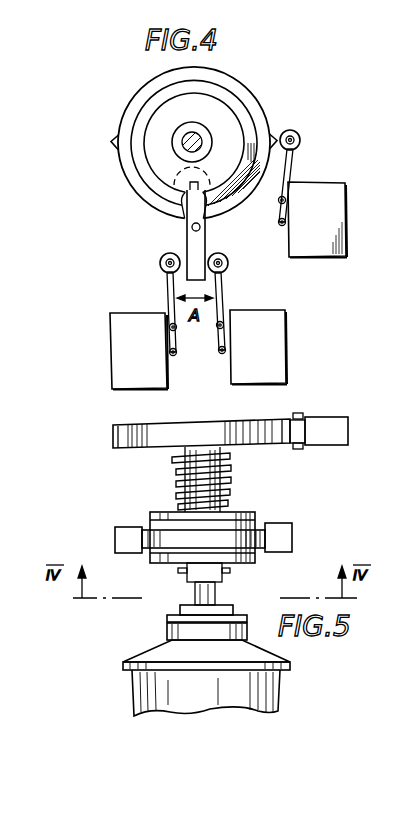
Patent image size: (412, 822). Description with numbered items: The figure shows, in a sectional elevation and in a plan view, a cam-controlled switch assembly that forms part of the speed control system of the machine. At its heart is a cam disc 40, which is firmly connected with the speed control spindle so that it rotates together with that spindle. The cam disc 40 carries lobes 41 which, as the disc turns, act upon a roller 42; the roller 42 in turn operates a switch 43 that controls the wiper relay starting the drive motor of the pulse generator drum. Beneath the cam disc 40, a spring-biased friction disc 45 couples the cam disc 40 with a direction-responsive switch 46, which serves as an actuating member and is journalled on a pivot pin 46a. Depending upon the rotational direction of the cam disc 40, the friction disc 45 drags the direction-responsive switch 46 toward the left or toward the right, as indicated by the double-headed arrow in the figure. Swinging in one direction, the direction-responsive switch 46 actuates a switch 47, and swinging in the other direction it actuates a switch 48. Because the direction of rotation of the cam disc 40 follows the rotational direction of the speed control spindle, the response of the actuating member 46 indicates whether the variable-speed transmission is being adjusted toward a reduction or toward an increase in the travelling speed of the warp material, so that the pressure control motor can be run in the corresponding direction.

In FIG. 4, the cam disc 40 is at (256, 116).
In FIG. 5, the cam disc 40 is at (252, 445).
In FIG. 4, the lobes 41 is at (113, 142).
In FIG. 5, the lobes 41 is at (113, 437).
In FIG. 4, the roller 42 is at (300, 139).
In FIG. 5, the roller 42 is at (304, 449).
In FIG. 4, the switch 43 is at (320, 193).
In FIG. 5, the switch 43 is at (347, 446).
In FIG. 5, the spring-biased friction disc 45 is at (270, 530).
In FIG. 4, the direction-responsive switch 46 is at (204, 246).
In FIG. 4, the pivot pin 46a is at (191, 231).
In FIG. 4, the switch 47 is at (263, 317).
In FIG. 5, the switch 47 is at (292, 538).
In FIG. 4, the switch 48 is at (130, 323).
In FIG. 5, the switch 48 is at (135, 535).